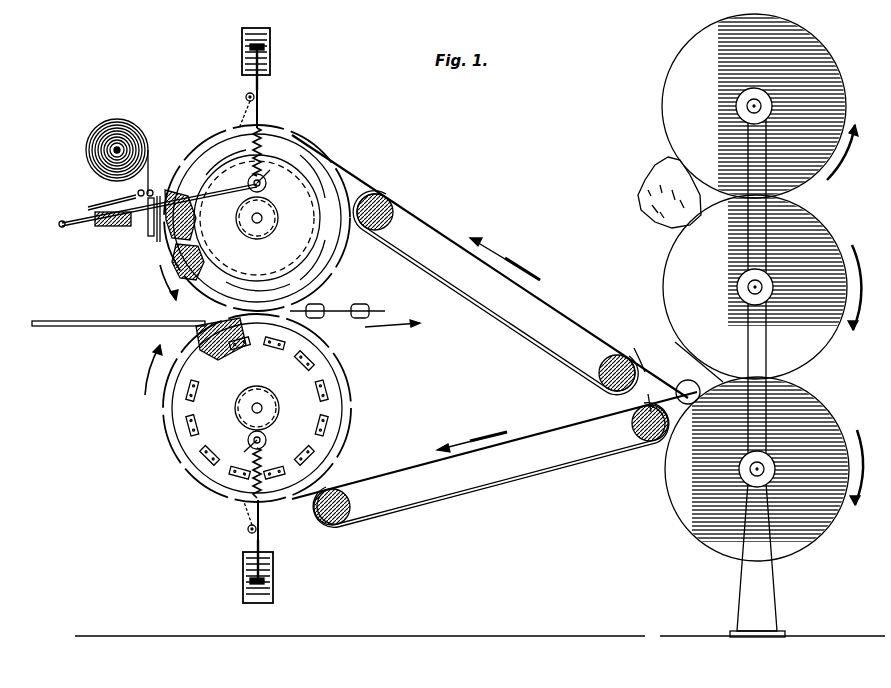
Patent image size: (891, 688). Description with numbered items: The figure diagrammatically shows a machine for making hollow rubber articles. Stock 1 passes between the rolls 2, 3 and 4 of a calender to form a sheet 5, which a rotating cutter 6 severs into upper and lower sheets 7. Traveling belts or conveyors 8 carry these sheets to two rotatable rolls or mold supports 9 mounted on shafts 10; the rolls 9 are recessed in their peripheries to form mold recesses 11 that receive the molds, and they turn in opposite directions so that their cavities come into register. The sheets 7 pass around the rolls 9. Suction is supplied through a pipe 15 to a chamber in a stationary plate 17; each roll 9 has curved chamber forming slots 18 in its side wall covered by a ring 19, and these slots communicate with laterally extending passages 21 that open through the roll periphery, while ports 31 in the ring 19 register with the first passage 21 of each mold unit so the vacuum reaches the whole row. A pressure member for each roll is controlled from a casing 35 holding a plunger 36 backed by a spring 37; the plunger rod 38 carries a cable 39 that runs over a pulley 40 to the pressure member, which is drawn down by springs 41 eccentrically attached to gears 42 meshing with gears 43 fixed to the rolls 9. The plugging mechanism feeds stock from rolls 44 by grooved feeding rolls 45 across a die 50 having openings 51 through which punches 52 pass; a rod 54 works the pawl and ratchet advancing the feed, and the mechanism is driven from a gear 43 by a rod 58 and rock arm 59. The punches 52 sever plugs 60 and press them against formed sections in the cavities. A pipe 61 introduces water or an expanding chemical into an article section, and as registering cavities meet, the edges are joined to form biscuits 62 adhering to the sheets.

The stock 1 is at (648, 180).
The roll 2 is at (760, 106).
The roll 3 is at (762, 287).
The roll 4 is at (764, 469).
The sheet 5 is at (691, 357).
The rotating cutter 6 is at (681, 384).
The upper and lower sheets 7 is at (640, 372).
The traveling belts or conveyors 8 is at (496, 316).
The rotatable rolls or mold supports 9 is at (340, 242).
The shaft 10 is at (268, 214).
The mold recess 11 is at (210, 347).
The pipe 15 is at (214, 168).
The stationary plate 17 is at (257, 218).
The curved chamber forming slots 18 is at (278, 350).
The ring 19 is at (262, 282).
The laterally extending passages 21 is at (190, 410).
The ports 31 is at (306, 165).
The casing 35 is at (270, 30).
The plunger 36 is at (268, 44).
The spring 37 is at (268, 60).
The rod 38 is at (262, 82).
The cable 39 is at (260, 108).
The pulley 40 is at (246, 96).
The springs 41 is at (252, 142).
The gears 42 is at (266, 184).
The gears 43 is at (262, 218).
The rolls of stock 44 is at (104, 134).
The grooved feeding rolls 45 is at (132, 191).
The die 50 is at (152, 226).
The openings 51 is at (148, 228).
The punches 52 is at (116, 227).
The rod 54 is at (108, 204).
The rod 58 is at (159, 205).
The rock arm 59 is at (70, 224).
The plugs 60 is at (176, 190).
The pipe 61 is at (84, 320).
The biscuits 62 is at (355, 305).